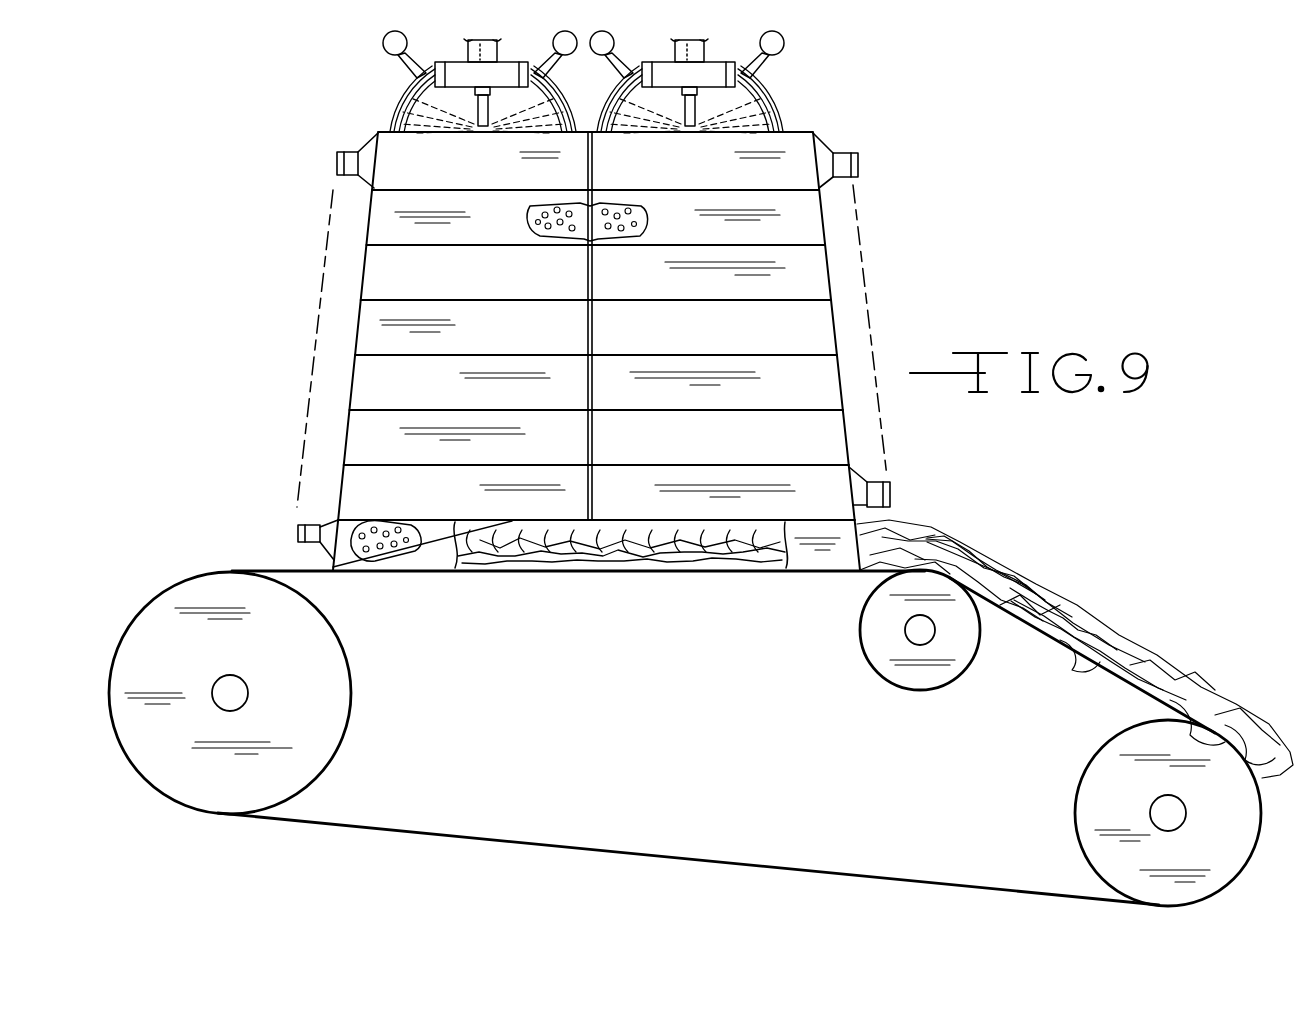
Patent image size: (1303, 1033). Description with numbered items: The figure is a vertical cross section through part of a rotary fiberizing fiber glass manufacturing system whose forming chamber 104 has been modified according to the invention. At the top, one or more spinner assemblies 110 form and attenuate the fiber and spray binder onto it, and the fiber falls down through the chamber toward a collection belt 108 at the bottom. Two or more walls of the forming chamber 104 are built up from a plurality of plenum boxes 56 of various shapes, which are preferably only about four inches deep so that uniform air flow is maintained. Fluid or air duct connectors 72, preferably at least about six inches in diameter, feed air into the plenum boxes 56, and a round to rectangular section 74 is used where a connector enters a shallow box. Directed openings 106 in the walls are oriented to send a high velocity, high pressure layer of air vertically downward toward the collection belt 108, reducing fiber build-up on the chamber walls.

The plenum box 56 is at (488, 182).
The fluid or air duct connector 72 is at (845, 152).
The round to rectangular section 74 is at (827, 142).
The forming chamber 104 is at (730, 343).
The directed openings 106 is at (598, 211).
The collection belt 108 is at (284, 568).
The spinner assembly 110 is at (436, 72).